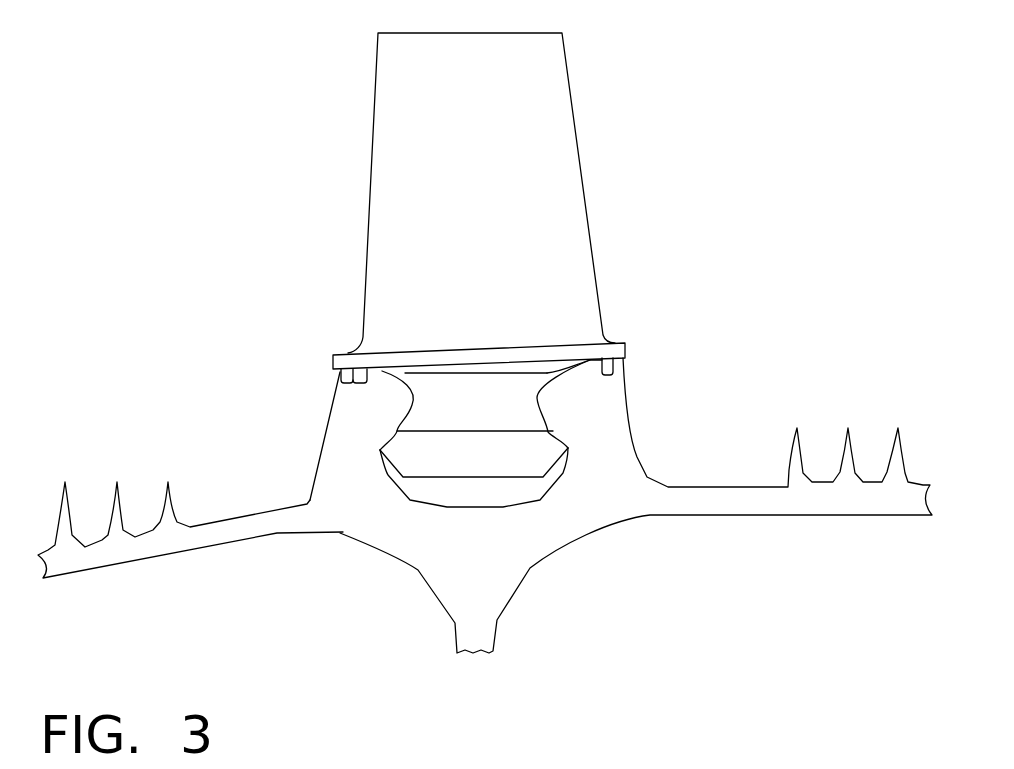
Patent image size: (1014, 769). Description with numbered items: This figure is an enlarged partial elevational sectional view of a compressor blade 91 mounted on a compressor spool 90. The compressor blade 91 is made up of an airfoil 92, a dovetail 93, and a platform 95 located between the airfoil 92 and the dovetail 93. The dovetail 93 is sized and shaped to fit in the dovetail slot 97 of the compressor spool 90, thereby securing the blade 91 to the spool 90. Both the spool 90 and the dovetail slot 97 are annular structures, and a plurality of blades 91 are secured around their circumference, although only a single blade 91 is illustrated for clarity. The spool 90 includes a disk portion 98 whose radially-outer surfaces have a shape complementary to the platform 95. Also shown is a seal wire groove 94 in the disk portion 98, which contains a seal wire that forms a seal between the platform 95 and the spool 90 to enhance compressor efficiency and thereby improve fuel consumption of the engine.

The compressor spool 90 is at (318, 455).
The compressor blade 91 is at (348, 152).
The airfoil 92 is at (533, 178).
The dovetail 93 is at (520, 399).
The seal wire groove 94 is at (343, 383).
The platform 95 is at (552, 358).
The dovetail slot 97 is at (570, 475).
The disk portion 98 is at (358, 425).